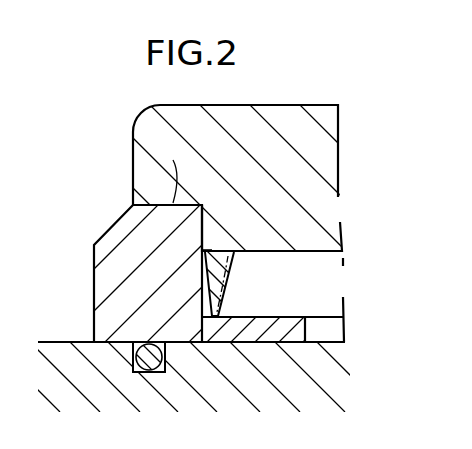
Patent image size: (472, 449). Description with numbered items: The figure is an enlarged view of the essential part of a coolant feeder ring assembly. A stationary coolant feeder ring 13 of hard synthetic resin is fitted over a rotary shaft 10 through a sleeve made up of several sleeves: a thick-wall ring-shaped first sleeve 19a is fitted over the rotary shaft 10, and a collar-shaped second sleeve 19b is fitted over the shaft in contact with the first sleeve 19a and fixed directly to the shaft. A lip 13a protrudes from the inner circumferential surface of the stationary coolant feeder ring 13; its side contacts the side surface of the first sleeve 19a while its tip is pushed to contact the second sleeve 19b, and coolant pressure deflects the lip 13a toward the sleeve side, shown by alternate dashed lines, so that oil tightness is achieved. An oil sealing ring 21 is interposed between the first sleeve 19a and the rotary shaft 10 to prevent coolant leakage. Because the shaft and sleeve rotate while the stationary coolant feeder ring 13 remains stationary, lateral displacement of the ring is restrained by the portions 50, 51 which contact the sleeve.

The rotary shaft 10 is at (77, 365).
The stationary coolant feeder ring 13 is at (292, 137).
The lip 13a is at (222, 283).
The first sleeve 19a is at (135, 250).
The second sleeve 19b is at (258, 332).
The oil sealing ring 21 is at (142, 375).
The portion 50 is at (173, 160).
The portion 51 is at (212, 220).